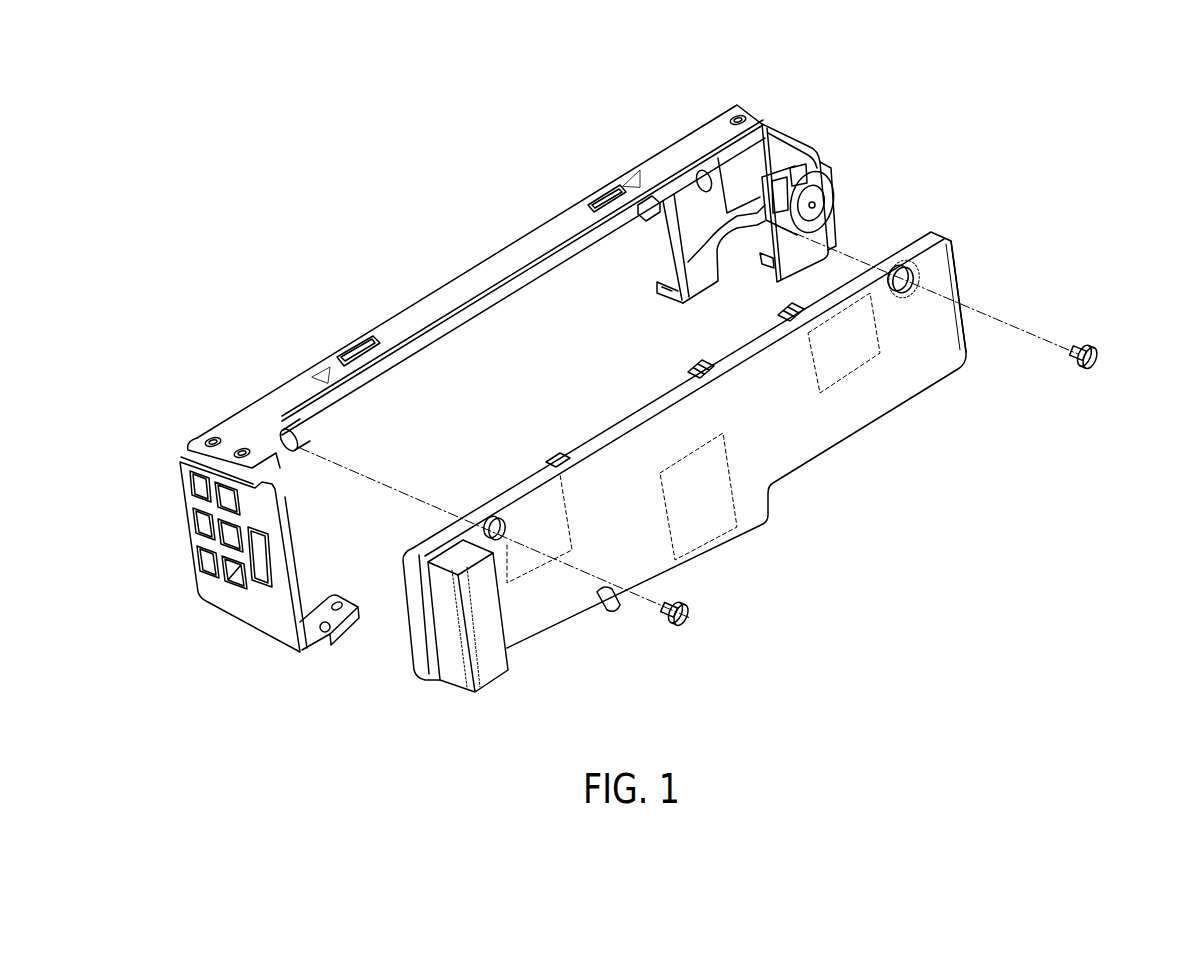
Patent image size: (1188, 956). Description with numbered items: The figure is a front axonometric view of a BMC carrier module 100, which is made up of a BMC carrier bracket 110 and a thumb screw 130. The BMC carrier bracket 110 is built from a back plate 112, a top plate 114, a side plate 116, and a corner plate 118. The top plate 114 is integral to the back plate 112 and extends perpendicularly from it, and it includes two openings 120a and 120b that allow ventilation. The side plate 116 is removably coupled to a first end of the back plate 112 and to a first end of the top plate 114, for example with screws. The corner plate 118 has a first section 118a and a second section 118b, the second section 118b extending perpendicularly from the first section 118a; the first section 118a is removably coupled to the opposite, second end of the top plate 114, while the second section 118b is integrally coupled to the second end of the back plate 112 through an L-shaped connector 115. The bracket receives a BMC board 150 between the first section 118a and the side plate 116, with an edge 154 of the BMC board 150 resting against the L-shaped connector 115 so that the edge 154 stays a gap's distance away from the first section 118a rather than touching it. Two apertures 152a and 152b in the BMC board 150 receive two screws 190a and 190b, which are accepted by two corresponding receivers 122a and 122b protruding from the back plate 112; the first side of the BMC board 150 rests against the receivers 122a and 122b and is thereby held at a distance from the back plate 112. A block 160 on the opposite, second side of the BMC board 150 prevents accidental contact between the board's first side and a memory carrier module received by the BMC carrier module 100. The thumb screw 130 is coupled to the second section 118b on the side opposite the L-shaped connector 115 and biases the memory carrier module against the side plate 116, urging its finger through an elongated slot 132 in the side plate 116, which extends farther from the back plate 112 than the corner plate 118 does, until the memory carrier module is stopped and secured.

The BMC carrier module 100 is at (1017, 124).
The BMC carrier bracket 110 is at (445, 249).
The back plate 112 is at (470, 328).
The top plate 114 is at (495, 262).
The L-shaped connector 115 is at (712, 224).
The side plate 116 is at (230, 582).
The corner plate 118 is at (747, 250).
The first section of the corner plate 118a is at (779, 137).
The second section of the corner plate 118b is at (839, 246).
The opening 120a is at (352, 347).
The opening 120b is at (607, 191).
The receiver 122a is at (281, 426).
The receiver 122b is at (698, 158).
The thumb screw 130 is at (839, 195).
The elongated slot 132 is at (263, 583).
The BMC board 150 is at (806, 437).
The aperture 152a is at (500, 538).
The aperture 152b is at (897, 298).
The edge of the BMC board 154 is at (967, 325).
The block 160 is at (462, 675).
The screw 190a is at (685, 628).
The screw 190b is at (1093, 367).